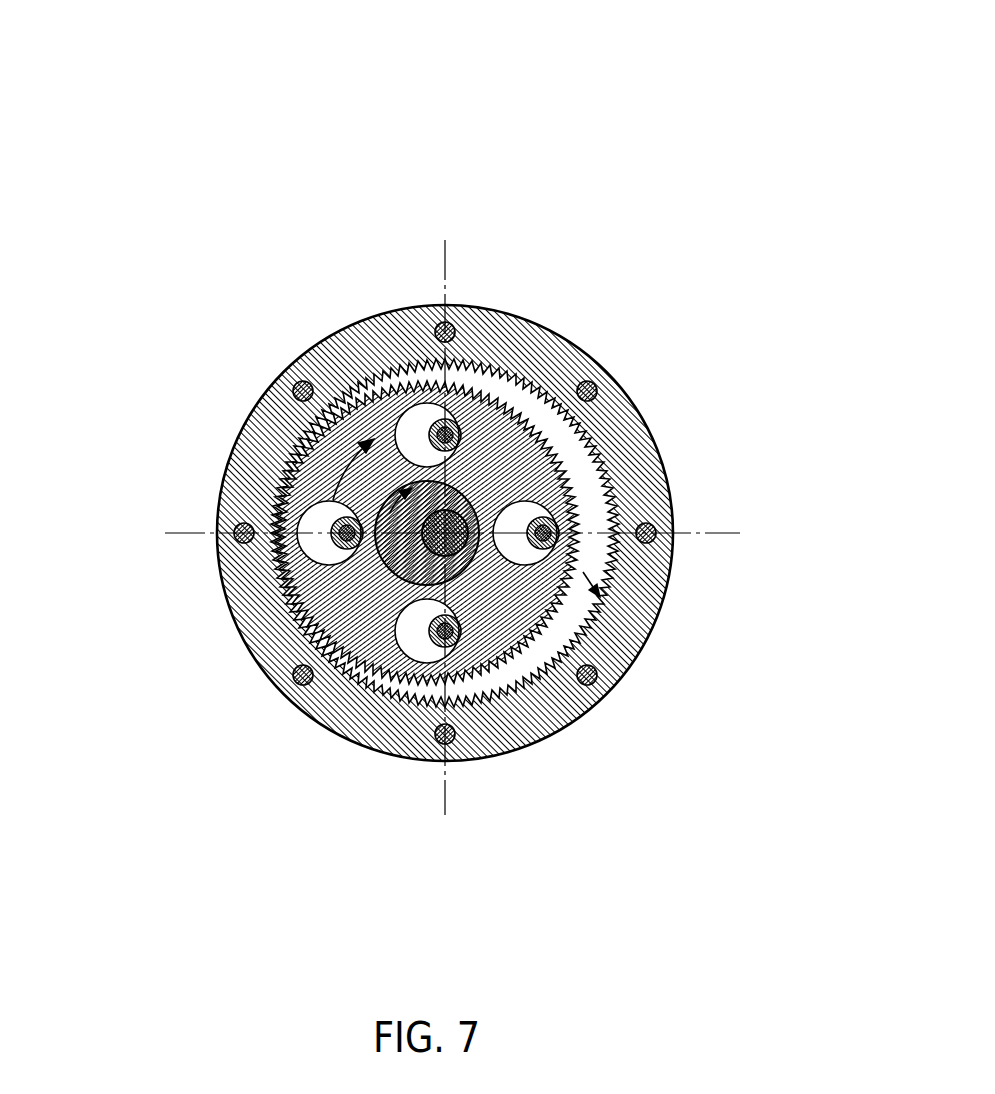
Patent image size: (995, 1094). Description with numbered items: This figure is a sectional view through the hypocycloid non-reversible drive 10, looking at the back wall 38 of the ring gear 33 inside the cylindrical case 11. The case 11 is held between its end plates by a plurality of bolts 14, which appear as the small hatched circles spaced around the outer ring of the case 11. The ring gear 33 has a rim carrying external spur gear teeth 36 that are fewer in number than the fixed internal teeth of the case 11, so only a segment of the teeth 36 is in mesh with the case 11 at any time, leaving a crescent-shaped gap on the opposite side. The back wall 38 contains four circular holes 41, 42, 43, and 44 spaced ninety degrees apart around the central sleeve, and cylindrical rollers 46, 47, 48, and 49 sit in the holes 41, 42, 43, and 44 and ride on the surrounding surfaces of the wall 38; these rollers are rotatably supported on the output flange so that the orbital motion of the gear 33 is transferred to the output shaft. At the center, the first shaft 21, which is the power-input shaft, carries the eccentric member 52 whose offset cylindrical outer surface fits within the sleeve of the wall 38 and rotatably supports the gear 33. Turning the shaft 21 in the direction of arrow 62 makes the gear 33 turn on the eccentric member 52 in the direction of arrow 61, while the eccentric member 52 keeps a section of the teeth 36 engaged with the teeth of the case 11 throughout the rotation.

The hypocycloid non-reversible drive 10 is at (311, 167).
The case 11 is at (268, 607).
The bolts 14 is at (563, 440).
The first shaft 21 is at (560, 658).
The ring gear 33 is at (628, 655).
The external spur gear teeth 36 is at (495, 480).
The back wall 38 is at (378, 625).
The circular hole 41 is at (280, 576).
The circular hole 42 is at (338, 362).
The circular hole 43 is at (535, 518).
The circular hole 44 is at (413, 645).
The roller 46 is at (333, 522).
The roller 47 is at (433, 421).
The roller 48 is at (633, 405).
The roller 49 is at (455, 690).
The eccentric member 52 is at (470, 648).
The arrow 61 is at (333, 397).
The arrow 62 is at (343, 610).